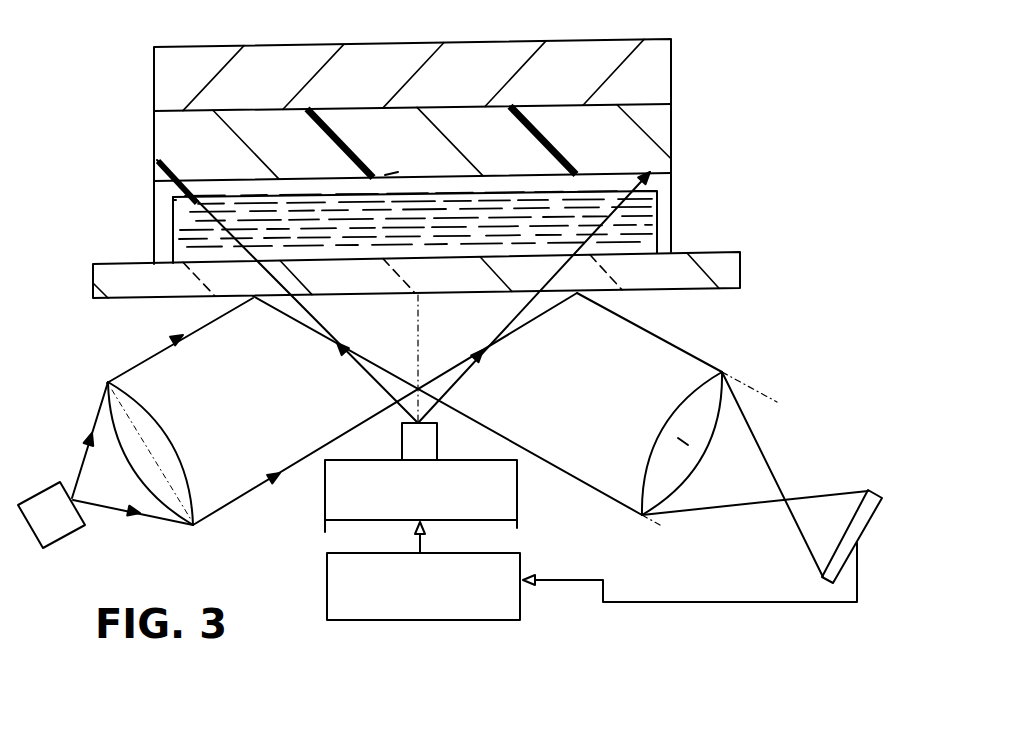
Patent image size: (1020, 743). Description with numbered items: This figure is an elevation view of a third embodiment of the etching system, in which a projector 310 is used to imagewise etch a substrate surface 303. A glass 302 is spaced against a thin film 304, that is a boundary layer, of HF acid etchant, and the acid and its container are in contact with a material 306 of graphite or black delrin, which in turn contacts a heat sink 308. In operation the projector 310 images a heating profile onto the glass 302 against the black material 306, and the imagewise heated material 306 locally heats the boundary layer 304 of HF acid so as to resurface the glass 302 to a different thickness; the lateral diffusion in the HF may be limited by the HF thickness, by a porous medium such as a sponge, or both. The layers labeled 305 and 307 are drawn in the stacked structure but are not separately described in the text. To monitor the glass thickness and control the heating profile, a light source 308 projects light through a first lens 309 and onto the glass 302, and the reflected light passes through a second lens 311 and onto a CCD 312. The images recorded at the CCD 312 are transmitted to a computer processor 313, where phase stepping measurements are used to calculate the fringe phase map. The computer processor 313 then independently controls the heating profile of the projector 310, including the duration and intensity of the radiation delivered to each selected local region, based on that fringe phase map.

The glass 302 is at (660, 294).
The substrate surface 303 is at (207, 262).
The thin film 304 is at (672, 207).
The liquid crystal layer 305 is at (640, 230).
The material 306 is at (672, 133).
The top substrate layer 307 is at (672, 83).
The light source 308 is at (62, 537).
The first lens 309 is at (167, 442).
The projector 310 is at (517, 476).
The second lens 311 is at (677, 418).
The CCD 312 is at (877, 490).
The computer processor 313 is at (455, 607).